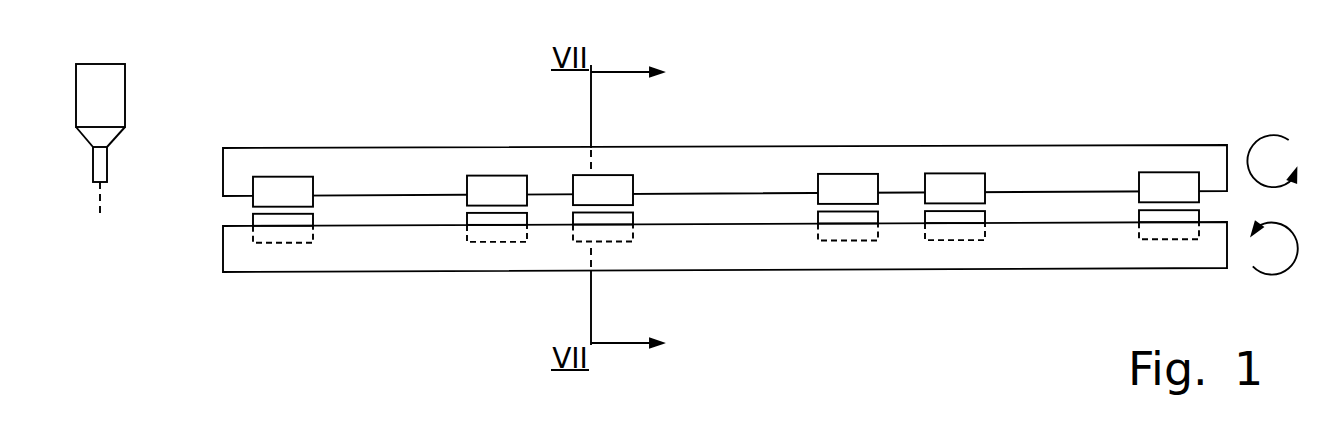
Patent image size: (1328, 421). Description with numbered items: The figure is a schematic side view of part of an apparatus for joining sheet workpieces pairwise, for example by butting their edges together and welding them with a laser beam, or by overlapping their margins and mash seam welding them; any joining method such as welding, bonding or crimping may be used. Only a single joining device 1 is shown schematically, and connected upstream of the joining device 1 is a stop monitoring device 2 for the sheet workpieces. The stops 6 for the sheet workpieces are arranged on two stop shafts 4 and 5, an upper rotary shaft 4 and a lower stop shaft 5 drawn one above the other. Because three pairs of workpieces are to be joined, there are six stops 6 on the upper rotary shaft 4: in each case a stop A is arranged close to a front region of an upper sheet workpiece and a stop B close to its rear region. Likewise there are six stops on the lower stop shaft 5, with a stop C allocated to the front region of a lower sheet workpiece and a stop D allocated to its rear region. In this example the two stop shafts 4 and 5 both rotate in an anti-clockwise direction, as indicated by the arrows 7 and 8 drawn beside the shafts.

The joining device 1 is at (147, 96).
The stop monitoring device 2 is at (937, 282).
The upper stop shaft 4 is at (1072, 160).
The lower stop shaft 5 is at (1083, 247).
The stop 6 is at (326, 132).
The arrow 7 is at (1268, 134).
The arrow 8 is at (1277, 275).
The stop A is at (302, 192).
The stop B is at (486, 182).
The stop C is at (297, 237).
The stop D is at (486, 233).